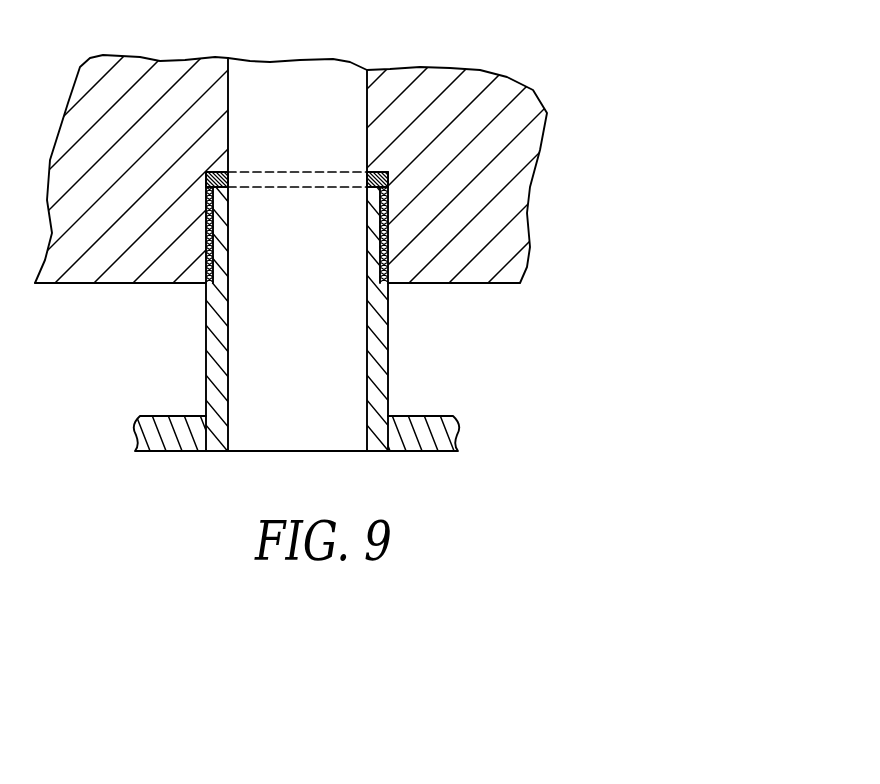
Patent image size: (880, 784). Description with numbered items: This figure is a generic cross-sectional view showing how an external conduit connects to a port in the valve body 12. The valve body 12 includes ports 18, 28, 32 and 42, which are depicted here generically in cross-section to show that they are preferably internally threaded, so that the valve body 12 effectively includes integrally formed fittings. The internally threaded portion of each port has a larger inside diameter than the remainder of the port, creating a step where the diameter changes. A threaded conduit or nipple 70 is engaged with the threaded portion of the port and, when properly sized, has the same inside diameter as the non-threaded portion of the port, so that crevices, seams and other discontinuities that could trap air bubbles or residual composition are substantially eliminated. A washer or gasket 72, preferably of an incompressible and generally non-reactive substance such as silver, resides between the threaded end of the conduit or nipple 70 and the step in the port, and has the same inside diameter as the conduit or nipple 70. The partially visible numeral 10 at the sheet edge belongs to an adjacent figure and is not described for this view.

The valve body 12 is at (433, 80).
The port 18 is at (354, 314).
The port 28 is at (354, 314).
The port 32 is at (354, 314).
The port 42 is at (332, 317).
The threaded conduit or nipple 70 is at (225, 315).
The washer or gasket 72 is at (240, 172).
The assembly 10 is at (481, 773).